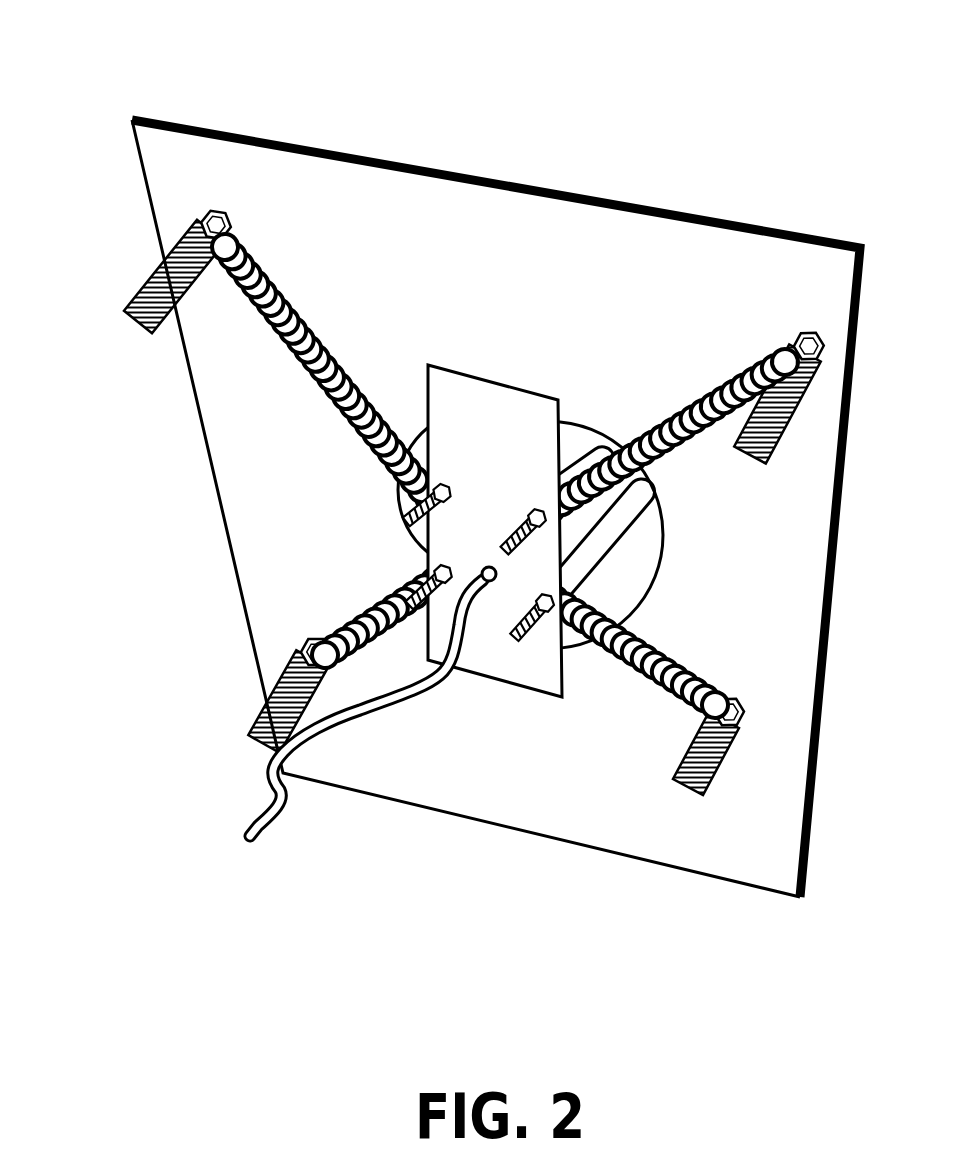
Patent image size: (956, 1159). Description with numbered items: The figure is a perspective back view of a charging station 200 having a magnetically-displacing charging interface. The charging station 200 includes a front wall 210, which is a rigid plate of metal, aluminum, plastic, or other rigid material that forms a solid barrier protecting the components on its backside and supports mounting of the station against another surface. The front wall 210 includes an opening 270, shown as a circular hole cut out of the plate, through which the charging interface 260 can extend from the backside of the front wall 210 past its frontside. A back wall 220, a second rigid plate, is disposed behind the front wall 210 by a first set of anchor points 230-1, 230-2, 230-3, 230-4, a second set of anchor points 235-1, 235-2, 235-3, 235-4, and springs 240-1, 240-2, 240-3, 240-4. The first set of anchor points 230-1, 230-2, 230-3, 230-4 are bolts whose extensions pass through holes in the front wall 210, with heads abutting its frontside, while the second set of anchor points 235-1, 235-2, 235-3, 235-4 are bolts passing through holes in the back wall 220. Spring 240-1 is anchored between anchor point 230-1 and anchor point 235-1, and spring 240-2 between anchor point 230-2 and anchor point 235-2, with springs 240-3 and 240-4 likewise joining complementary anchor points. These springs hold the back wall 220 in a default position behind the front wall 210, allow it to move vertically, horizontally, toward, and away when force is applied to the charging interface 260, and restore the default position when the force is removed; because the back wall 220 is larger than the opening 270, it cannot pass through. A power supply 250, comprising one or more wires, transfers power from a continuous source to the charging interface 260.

The charging station 200 is at (464, 62).
The front wall 210 is at (132, 120).
The back wall 220 is at (458, 372).
The anchor point 230-1 is at (230, 240).
The anchor point 230-2 is at (788, 342).
The anchor point 230-3 is at (302, 640).
The anchor point 230-4 is at (735, 697).
The anchor point 235-1 is at (440, 483).
The anchor point 235-2 is at (533, 507).
The anchor point 235-3 is at (445, 565).
The anchor point 235-4 is at (542, 625).
The spring 240-1 is at (278, 302).
The spring 240-2 is at (717, 403).
The spring 240-3 is at (385, 598).
The spring 240-4 is at (640, 648).
The power supply 250 is at (263, 830).
The magnetically-displacing charging interface 260 is at (640, 535).
The opening 270 is at (658, 513).